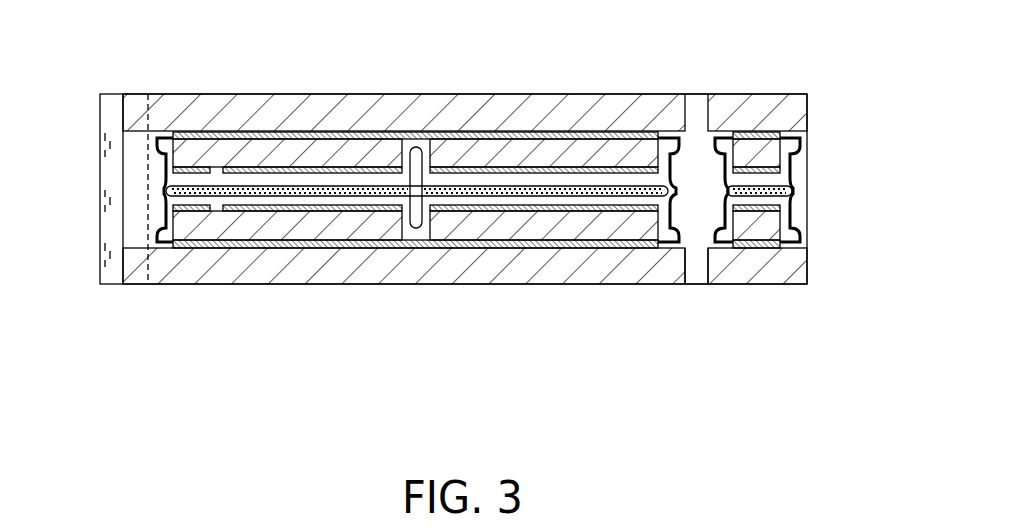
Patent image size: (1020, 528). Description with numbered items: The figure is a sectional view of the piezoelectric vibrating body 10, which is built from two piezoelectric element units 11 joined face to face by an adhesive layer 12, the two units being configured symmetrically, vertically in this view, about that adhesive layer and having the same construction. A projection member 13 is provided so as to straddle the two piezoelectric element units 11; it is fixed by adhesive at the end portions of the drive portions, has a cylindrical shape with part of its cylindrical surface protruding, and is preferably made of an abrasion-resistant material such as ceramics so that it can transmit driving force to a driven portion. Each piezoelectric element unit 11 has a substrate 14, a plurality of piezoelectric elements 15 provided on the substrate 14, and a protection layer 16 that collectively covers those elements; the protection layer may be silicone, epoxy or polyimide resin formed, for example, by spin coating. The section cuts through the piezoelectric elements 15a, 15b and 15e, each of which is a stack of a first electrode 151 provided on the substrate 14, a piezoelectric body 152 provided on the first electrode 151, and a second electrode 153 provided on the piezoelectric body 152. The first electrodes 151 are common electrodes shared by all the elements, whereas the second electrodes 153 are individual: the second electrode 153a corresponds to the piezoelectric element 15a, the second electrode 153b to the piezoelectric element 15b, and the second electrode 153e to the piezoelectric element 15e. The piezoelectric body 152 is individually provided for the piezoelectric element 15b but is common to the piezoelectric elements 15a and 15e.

The piezoelectric vibrating body 10 is at (788, 79).
The piezoelectric element unit 11 is at (817, 108).
The adhesive layer 12 is at (793, 191).
The projection member 13 is at (108, 172).
The substrate 14 is at (762, 272).
The piezoelectric element 15 is at (559, 254).
The piezoelectric element 15a is at (325, 262).
The piezoelectric element 15b is at (556, 262).
The piezoelectric element 15e is at (195, 182).
The protection layer 16 is at (470, 200).
The first electrode 151 is at (505, 249).
The piezoelectric body 152 is at (233, 228).
The second electrode 153 is at (440, 269).
The second electrode 153a is at (303, 212).
The second electrode 153b is at (642, 213).
The second electrode 153e is at (180, 245).